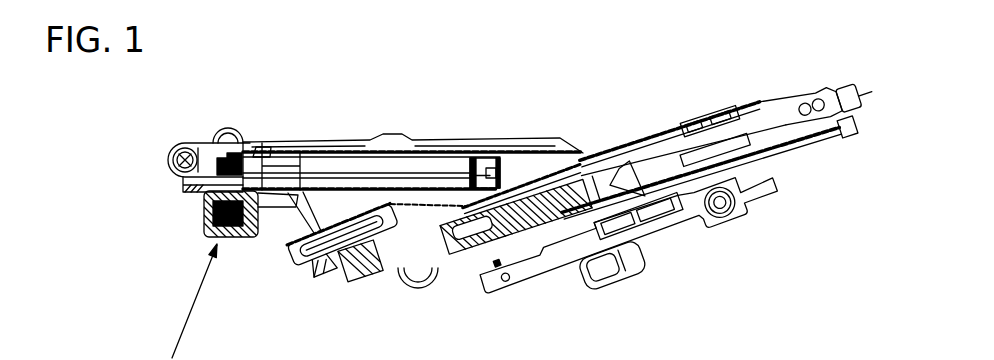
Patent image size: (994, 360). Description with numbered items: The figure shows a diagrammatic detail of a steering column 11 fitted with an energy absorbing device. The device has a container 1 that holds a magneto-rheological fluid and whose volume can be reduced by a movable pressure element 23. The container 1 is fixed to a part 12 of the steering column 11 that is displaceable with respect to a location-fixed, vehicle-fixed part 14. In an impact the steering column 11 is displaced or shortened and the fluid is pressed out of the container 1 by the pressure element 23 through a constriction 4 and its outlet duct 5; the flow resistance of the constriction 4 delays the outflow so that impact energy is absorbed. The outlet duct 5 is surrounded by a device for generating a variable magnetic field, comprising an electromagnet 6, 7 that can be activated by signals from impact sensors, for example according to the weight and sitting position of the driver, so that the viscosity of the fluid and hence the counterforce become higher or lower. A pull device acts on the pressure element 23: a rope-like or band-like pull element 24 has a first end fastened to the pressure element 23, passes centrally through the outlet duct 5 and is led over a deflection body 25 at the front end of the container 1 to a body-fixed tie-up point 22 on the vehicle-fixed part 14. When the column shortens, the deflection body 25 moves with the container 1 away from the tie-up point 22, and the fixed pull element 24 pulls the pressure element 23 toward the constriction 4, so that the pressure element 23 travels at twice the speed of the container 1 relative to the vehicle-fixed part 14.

The container 1 is at (303, 208).
The constriction 4 is at (283, 143).
The outlet duct 5 is at (255, 147).
The electromagnet 6 is at (210, 230).
The electromagnet 7 is at (200, 213).
The steering column 11 is at (712, 138).
The displaceable part of the steering column 12 is at (580, 153).
The vehicle-fixed part 14 is at (402, 137).
The tie-up point 22 is at (230, 128).
The pressure element 23 is at (480, 155).
The pull element 24 is at (410, 167).
The deflection body 25 is at (168, 158).